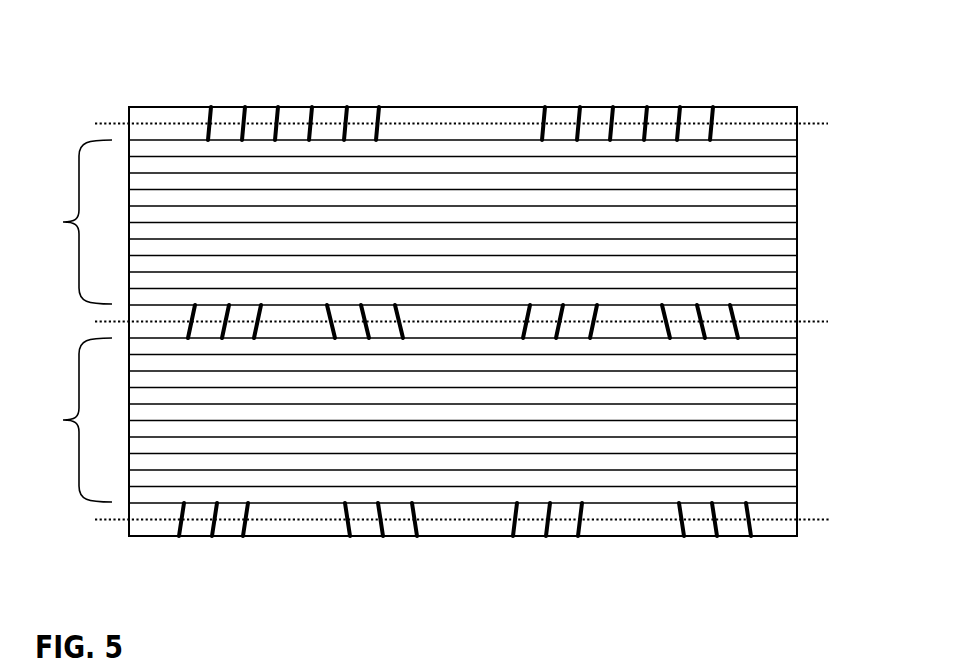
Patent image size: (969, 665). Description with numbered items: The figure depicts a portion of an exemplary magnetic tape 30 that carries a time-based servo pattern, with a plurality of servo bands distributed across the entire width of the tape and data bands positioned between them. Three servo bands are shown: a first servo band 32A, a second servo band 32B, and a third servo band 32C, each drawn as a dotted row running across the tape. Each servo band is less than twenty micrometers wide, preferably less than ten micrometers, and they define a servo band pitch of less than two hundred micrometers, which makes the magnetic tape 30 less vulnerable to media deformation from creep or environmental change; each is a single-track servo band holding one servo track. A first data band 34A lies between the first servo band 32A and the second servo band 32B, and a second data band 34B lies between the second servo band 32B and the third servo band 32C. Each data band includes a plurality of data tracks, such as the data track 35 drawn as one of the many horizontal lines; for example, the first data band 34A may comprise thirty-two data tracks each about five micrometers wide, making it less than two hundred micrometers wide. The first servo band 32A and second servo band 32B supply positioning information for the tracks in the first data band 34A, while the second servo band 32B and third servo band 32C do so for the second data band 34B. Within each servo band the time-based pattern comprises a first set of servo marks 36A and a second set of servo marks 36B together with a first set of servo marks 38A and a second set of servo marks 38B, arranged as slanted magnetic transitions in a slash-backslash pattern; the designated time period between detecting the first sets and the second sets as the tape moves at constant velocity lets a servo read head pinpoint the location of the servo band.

The magnetic tape 30 is at (157, 36).
The first servo band 32A is at (836, 124).
The second servo band 32B is at (836, 322).
The third servo band 32C is at (839, 518).
The first data band 34A is at (60, 222).
The second data band 34B is at (60, 420).
The data track 35 is at (803, 197).
The first set of servo marks 36A is at (244, 94).
The second set of servo marks 36B is at (346, 94).
The first set of servo marks 38A is at (577, 90).
The second set of servo marks 38B is at (682, 90).